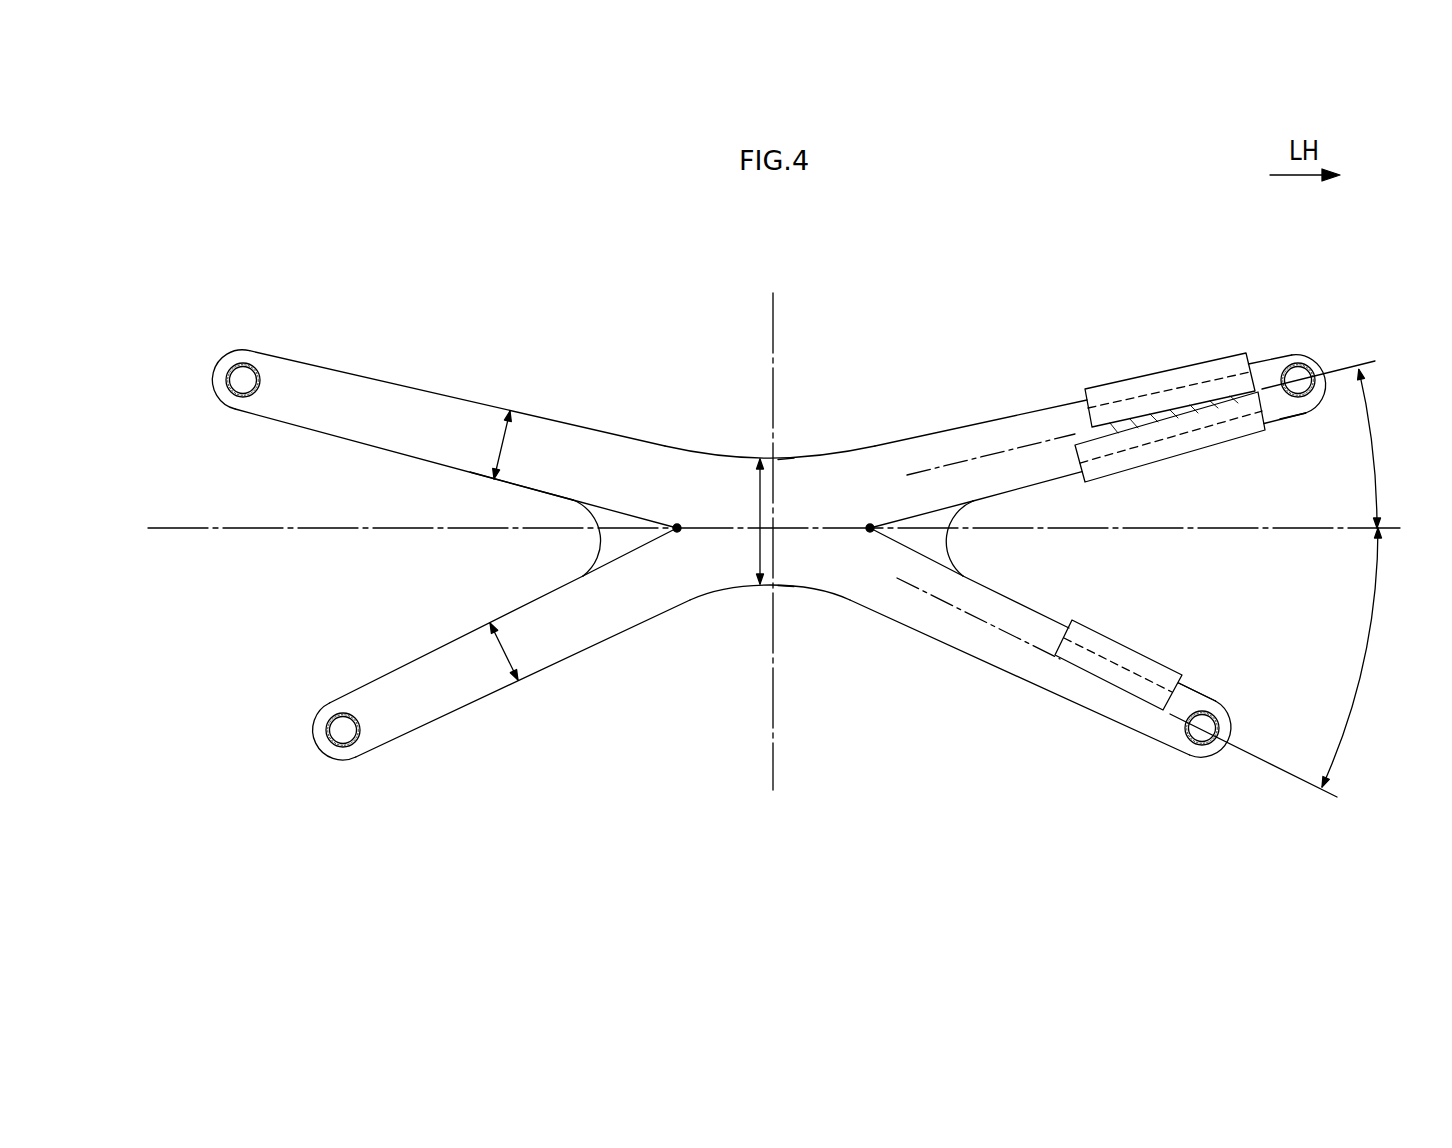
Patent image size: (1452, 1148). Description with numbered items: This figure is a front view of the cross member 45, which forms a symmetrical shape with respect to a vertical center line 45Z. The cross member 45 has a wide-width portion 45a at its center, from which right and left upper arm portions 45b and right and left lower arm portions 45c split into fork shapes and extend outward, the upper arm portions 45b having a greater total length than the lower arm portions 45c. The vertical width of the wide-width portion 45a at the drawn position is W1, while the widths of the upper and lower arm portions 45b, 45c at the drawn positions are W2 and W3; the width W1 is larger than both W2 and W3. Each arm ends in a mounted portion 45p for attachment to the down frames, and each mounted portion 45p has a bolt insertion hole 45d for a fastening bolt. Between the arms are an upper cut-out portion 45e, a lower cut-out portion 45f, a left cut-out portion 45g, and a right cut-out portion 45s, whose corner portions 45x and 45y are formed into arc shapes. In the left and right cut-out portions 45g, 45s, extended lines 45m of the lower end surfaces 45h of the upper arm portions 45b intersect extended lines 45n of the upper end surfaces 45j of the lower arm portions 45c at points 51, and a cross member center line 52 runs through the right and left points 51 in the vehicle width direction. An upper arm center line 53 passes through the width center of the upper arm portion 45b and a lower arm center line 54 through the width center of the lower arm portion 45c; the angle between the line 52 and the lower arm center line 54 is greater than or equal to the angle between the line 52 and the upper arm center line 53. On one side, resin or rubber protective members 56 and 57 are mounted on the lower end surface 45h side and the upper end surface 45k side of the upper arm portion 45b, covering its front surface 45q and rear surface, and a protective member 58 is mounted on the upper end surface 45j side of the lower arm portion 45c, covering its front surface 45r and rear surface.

The cross member 45 is at (518, 282).
The wide-width portion 45a is at (736, 454).
The upper arm portion 45b is at (420, 404).
The lower arm portion 45c is at (456, 696).
The bolt insertion hole 45d is at (232, 379).
The upper cut-out portion 45e is at (890, 430).
The lower cut-out portion 45f is at (674, 630).
The left cut-out portion 45g is at (1032, 500).
The lower end surface 45h is at (354, 448).
The upper end surface 45j is at (419, 655).
The upper end surface 45k is at (1061, 399).
The extended line 45m is at (632, 508).
The extended line 45n is at (630, 550).
The mounted portion 45p is at (243, 362).
The front surface 45q is at (1285, 406).
The front surface 45r is at (1184, 700).
The right cut-out portion 45s is at (468, 483).
The corner portion 45x is at (789, 455).
The corner portion 45y is at (595, 539).
The center line 45Z is at (779, 750).
The point 51 is at (682, 536).
The cross member center line 52 is at (1253, 534).
The upper arm center line 53 is at (1377, 345).
The lower arm center line 54 is at (1330, 802).
The protective member 56 is at (1198, 431).
The protective member 57 is at (1176, 392).
The protective member 58 is at (1138, 652).
The vertical width of wide-width portion W1 is at (741, 521).
The width of upper arm portion W2 is at (520, 445).
The width of lower arm portion W3 is at (519, 651).